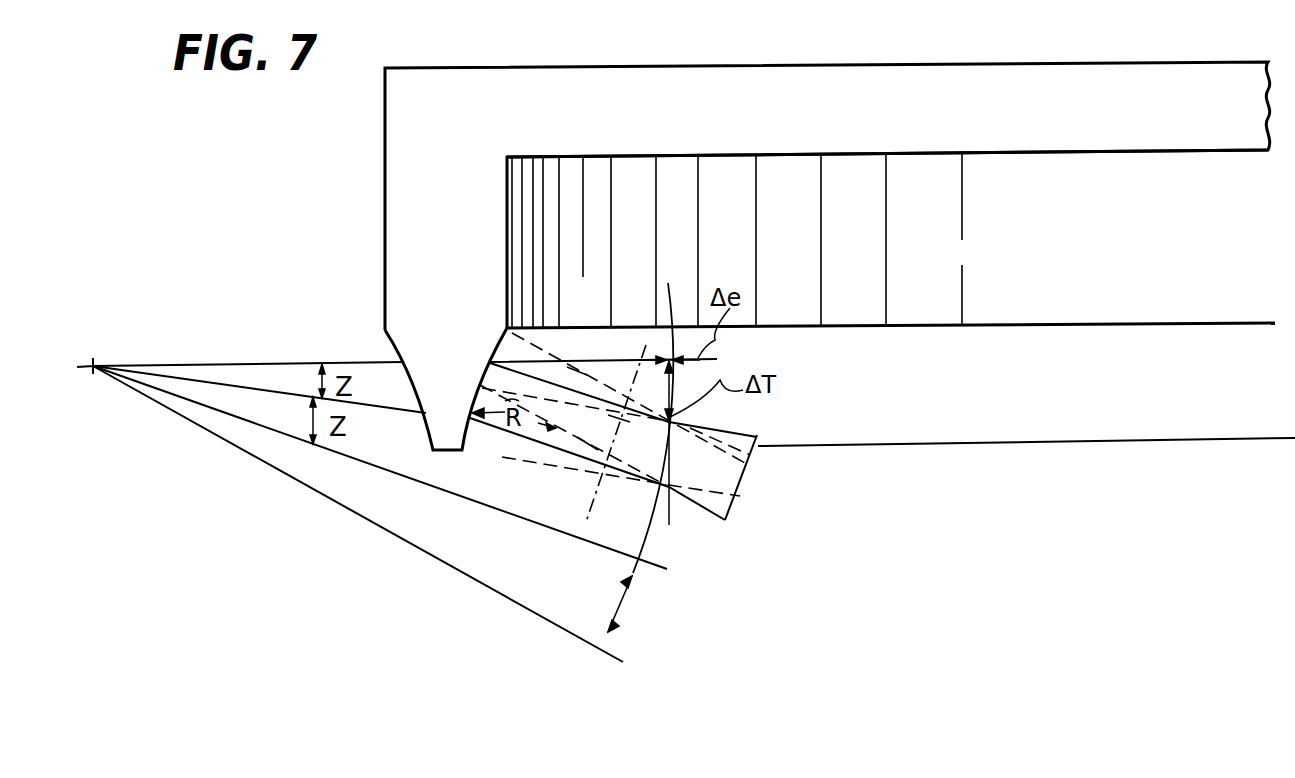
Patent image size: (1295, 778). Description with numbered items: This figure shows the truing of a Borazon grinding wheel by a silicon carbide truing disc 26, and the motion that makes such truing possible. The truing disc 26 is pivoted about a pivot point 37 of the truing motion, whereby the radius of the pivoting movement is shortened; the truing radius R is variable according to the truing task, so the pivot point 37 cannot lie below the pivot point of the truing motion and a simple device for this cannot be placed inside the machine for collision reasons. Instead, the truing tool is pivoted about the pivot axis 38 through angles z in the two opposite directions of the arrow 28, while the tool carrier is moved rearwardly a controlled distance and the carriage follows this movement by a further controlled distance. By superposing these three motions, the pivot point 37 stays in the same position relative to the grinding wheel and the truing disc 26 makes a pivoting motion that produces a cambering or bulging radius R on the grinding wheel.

The truing disc 26 is at (523, 390).
The arrow 28 is at (625, 600).
The pivot point 37 is at (746, 487).
The pivot axis 38 is at (93, 366).